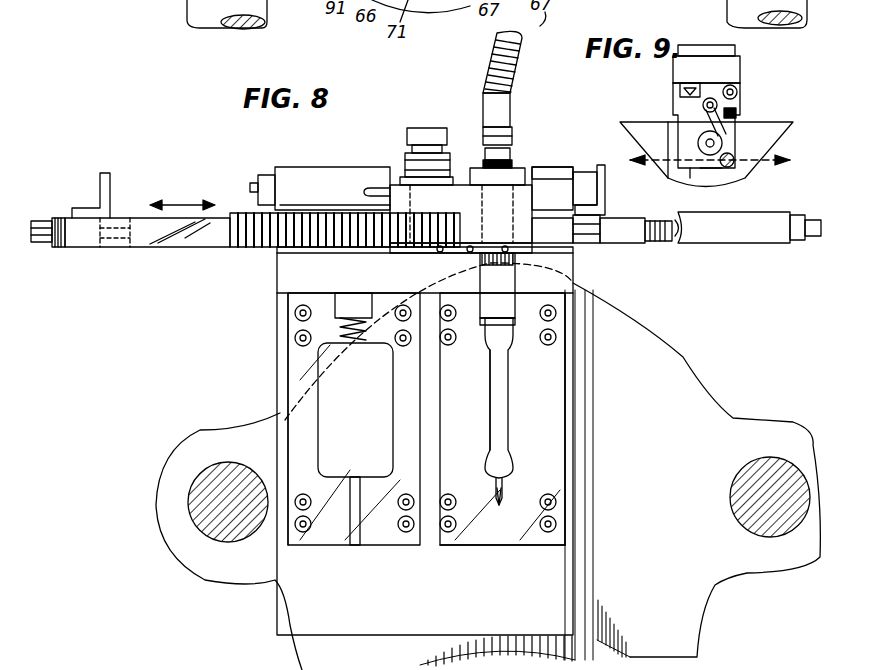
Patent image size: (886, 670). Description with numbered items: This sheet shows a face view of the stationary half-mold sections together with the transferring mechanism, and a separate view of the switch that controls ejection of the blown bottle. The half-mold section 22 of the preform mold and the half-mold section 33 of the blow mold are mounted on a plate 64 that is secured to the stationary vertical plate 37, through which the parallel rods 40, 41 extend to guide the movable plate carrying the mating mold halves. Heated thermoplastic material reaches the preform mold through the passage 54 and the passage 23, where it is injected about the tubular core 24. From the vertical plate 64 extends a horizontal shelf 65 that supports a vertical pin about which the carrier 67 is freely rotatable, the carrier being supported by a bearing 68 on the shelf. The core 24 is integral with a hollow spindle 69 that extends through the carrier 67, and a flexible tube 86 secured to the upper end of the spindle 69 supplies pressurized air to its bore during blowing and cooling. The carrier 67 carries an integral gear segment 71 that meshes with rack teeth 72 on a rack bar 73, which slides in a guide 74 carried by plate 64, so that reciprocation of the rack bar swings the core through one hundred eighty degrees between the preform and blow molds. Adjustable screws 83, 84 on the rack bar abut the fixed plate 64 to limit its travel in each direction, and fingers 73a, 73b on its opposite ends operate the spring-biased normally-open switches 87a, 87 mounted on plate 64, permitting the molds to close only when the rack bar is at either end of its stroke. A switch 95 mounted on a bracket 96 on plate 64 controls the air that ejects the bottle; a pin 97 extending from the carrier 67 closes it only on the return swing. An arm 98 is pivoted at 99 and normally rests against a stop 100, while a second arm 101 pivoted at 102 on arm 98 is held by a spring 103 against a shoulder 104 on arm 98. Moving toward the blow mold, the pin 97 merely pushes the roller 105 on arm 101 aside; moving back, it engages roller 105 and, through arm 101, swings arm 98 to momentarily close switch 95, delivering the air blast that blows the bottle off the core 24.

In FIG. 8, the half-mold section 22 is at (555, 446).
In FIG. 8, the passage 23 is at (505, 495).
In FIG. 8, the tubular core 24 is at (520, 392).
In FIG. 8, the half-mold section 33 is at (305, 398).
In FIG. 8, the stationary vertical plate 37 is at (683, 357).
In FIG. 8, the rod 40 is at (745, 522).
In FIG. 8, the rod 41 is at (215, 540).
In FIG. 8, the passage 54 is at (487, 545).
In FIG. 8, the plate 64 is at (292, 170).
In FIG. 9, the plate 64 is at (790, 132).
In FIG. 8, the horizontal shelf 65 is at (570, 258).
In FIG. 8, the carrier 67 is at (535, 198).
In FIG. 8, the bearing 68 is at (468, 247).
In FIG. 8, the hollow spindle 69 is at (515, 312).
In FIG. 8, the gear segment 71 is at (405, 218).
In FIG. 8, the rack teeth 72 is at (258, 248).
In FIG. 8, the rack bar 73 is at (165, 248).
In FIG. 8, the finger 73a is at (108, 176).
In FIG. 8, the finger 73b is at (606, 194).
In FIG. 8, the guide 74 is at (298, 208).
In FIG. 8, the adjustable screw 83 is at (42, 218).
In FIG. 8, the adjustable screw 84 is at (662, 243).
In FIG. 8, the flexible tube 86 is at (518, 60).
In FIG. 8, the switch 87 is at (578, 174).
In FIG. 8, the switch 87a is at (268, 180).
In FIG. 8, the switch 95 is at (430, 160).
In FIG. 9, the switch 95 is at (726, 72).
In FIG. 8, the bracket 96 is at (425, 130).
In FIG. 9, the bracket 96 is at (692, 50).
In FIG. 8, the pin 97 is at (368, 188).
In FIG. 9, the pin 97 is at (735, 165).
In FIG. 9, the arm 98 is at (737, 115).
In FIG. 9, the pivot 99 is at (737, 92).
In FIG. 9, the stop 100 is at (678, 115).
In FIG. 9, the second arm 101 is at (722, 138).
In FIG. 9, the pivot 102 is at (705, 110).
In FIG. 9, the spring 103 is at (700, 118).
In FIG. 9, the shoulder 104 is at (668, 128).
In FIG. 9, the roller 105 is at (712, 155).